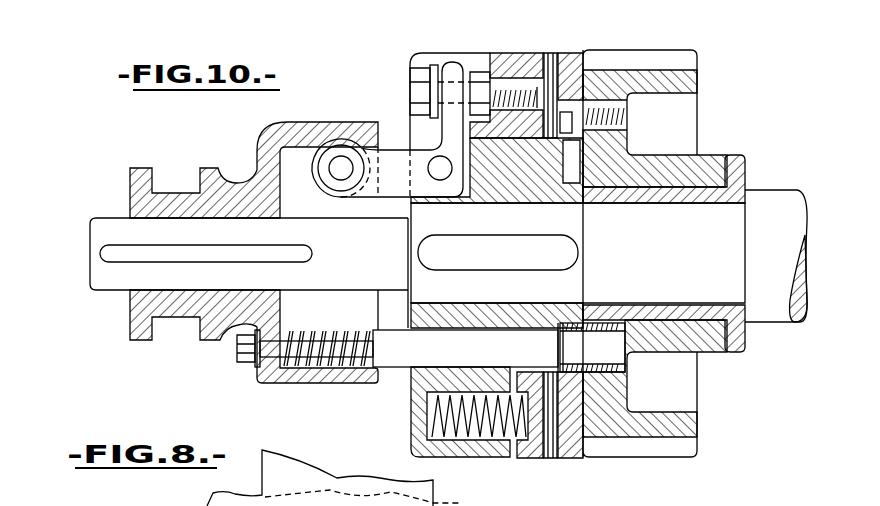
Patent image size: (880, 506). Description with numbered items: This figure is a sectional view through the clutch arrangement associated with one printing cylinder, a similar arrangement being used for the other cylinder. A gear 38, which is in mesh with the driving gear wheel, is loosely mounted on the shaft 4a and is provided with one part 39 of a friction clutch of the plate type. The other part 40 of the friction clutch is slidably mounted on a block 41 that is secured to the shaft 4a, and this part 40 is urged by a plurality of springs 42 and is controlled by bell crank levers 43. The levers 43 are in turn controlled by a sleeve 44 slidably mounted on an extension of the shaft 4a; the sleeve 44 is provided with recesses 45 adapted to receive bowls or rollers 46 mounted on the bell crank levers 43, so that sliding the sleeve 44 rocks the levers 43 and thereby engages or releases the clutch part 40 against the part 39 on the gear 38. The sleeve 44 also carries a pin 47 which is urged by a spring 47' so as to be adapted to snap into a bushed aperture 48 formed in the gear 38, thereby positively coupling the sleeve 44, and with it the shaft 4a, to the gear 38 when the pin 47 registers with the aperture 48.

The gear 38 is at (659, 448).
The part of friction clutch 39 is at (574, 460).
The part of friction clutch 40 is at (506, 37).
The block 41 is at (520, 166).
The springs 42 is at (456, 442).
The bell crank levers 43 is at (395, 146).
The sleeve 44 is at (264, 135).
The recesses 45 is at (336, 142).
The bowls or rollers 46 is at (342, 199).
The pin 47 is at (397, 348).
The spring 47' is at (327, 331).
The bushed aperture 48 is at (591, 347).
The shaft 4a is at (609, 256).